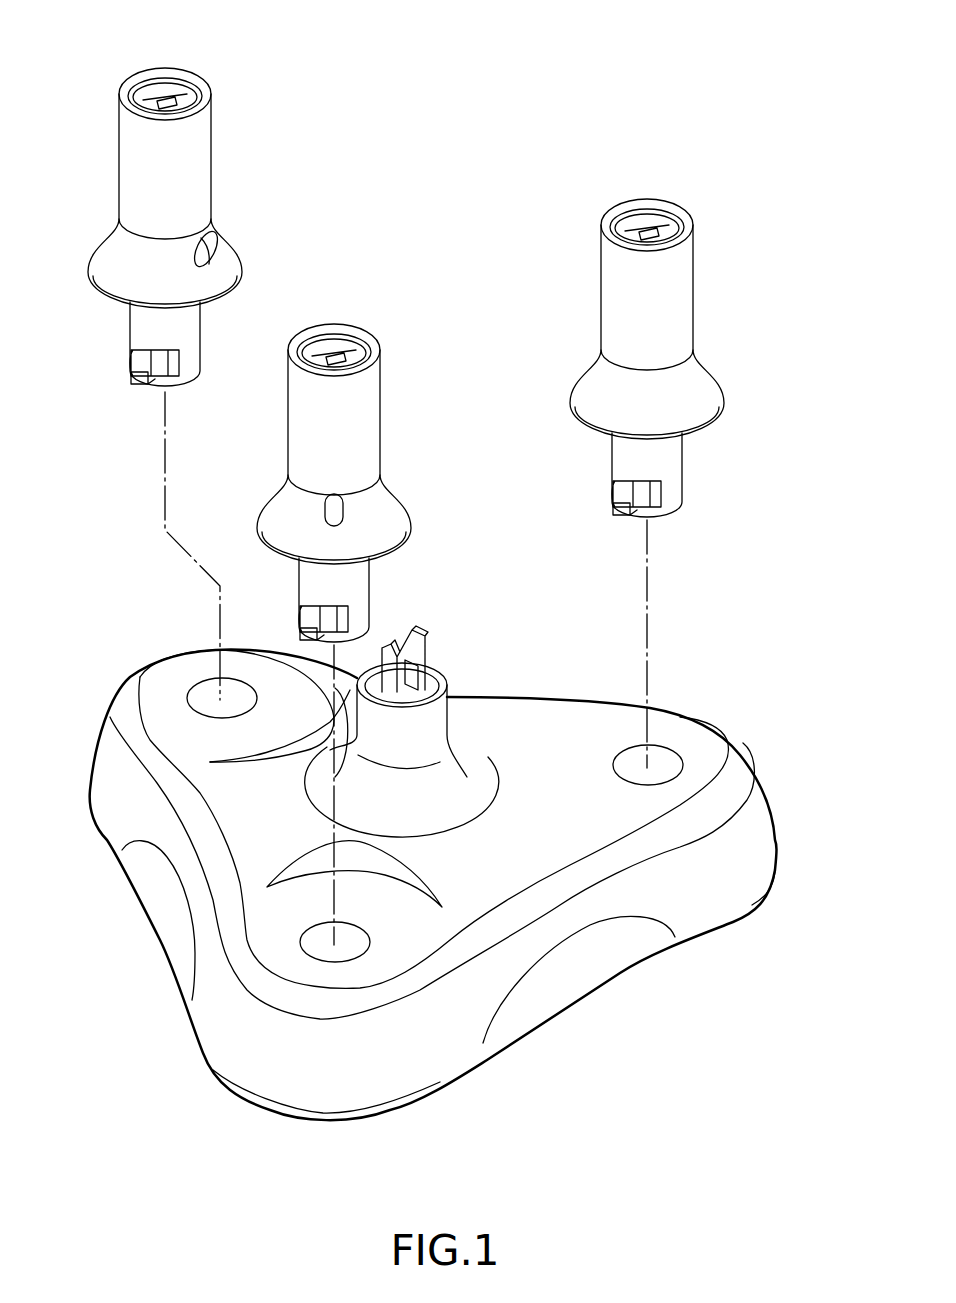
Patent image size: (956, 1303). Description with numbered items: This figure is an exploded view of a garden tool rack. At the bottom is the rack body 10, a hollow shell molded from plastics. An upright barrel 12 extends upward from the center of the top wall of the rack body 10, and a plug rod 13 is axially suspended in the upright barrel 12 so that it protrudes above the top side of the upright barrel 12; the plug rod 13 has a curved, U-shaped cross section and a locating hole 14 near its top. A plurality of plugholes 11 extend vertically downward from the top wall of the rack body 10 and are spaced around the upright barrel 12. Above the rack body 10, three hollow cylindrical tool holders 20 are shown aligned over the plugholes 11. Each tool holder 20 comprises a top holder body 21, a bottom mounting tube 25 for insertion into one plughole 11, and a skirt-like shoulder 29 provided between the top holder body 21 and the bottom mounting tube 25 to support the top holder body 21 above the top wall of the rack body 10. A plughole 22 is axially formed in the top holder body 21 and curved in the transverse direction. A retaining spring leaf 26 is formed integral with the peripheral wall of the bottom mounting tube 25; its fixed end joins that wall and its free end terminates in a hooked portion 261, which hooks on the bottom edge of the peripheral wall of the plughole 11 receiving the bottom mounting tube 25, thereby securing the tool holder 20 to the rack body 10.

The rack body 10 is at (768, 832).
The plugholes 11 is at (212, 692).
The upright barrel 12 is at (452, 712).
The plug rod 13 is at (412, 642).
The locating hole 14 is at (420, 670).
The tool holder 20 is at (231, 105).
The top holder body 21 is at (201, 158).
The plughole 22 is at (171, 102).
The bottom mounting tube 25 is at (196, 328).
The retaining spring leaf 26 is at (131, 362).
The hooked portion 261 is at (143, 384).
The skirt-like shoulder 29 is at (238, 247).